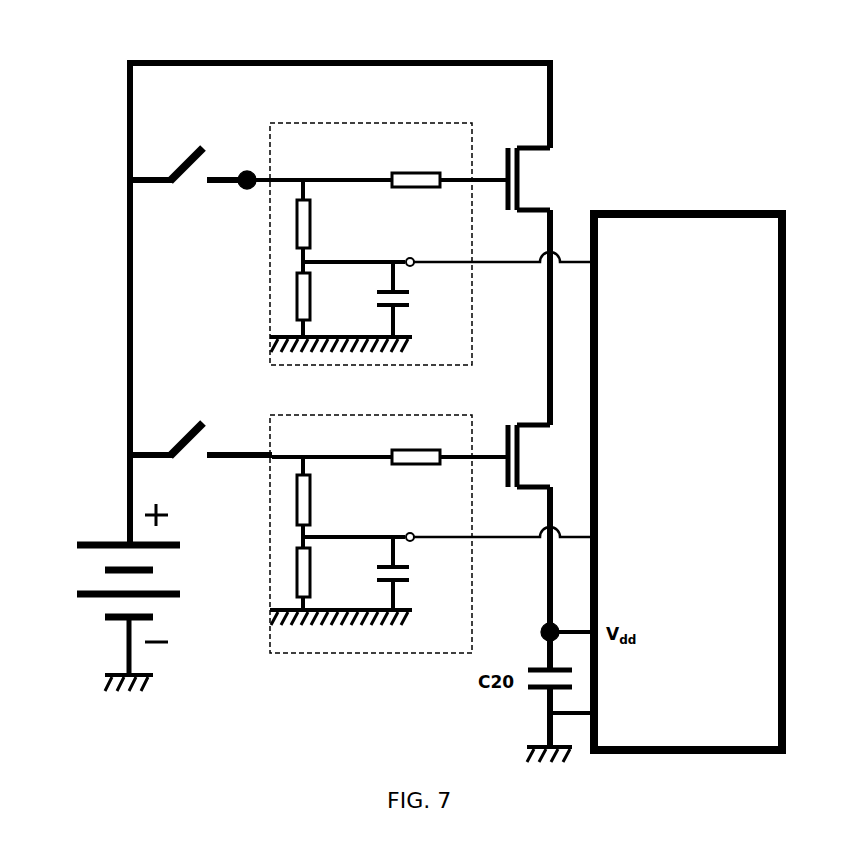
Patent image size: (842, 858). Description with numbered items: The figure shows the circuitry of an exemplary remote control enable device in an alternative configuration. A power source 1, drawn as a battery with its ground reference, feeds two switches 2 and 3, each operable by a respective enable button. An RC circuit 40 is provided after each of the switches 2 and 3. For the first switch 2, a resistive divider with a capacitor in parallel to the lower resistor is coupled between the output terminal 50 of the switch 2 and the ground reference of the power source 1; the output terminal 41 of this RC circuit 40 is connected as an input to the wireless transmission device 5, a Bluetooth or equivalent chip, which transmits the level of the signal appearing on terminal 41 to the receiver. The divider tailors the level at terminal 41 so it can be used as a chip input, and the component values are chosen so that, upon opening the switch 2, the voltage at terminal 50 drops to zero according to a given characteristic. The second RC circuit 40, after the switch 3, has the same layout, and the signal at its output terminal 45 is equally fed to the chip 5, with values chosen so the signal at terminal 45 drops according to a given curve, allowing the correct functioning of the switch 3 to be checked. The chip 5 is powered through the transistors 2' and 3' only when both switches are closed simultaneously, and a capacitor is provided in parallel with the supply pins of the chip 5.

The power source 1 is at (62, 573).
The switch 2 is at (188, 95).
The transistor 2' is at (565, 145).
The switch 3 is at (201, 388).
The transistor 3' is at (524, 427).
The wireless transmission device 5 is at (695, 248).
The RC circuit 40 is at (283, 238).
The output terminal 41 is at (495, 250).
The output terminal 45 is at (495, 526).
The output terminal 50 is at (244, 170).